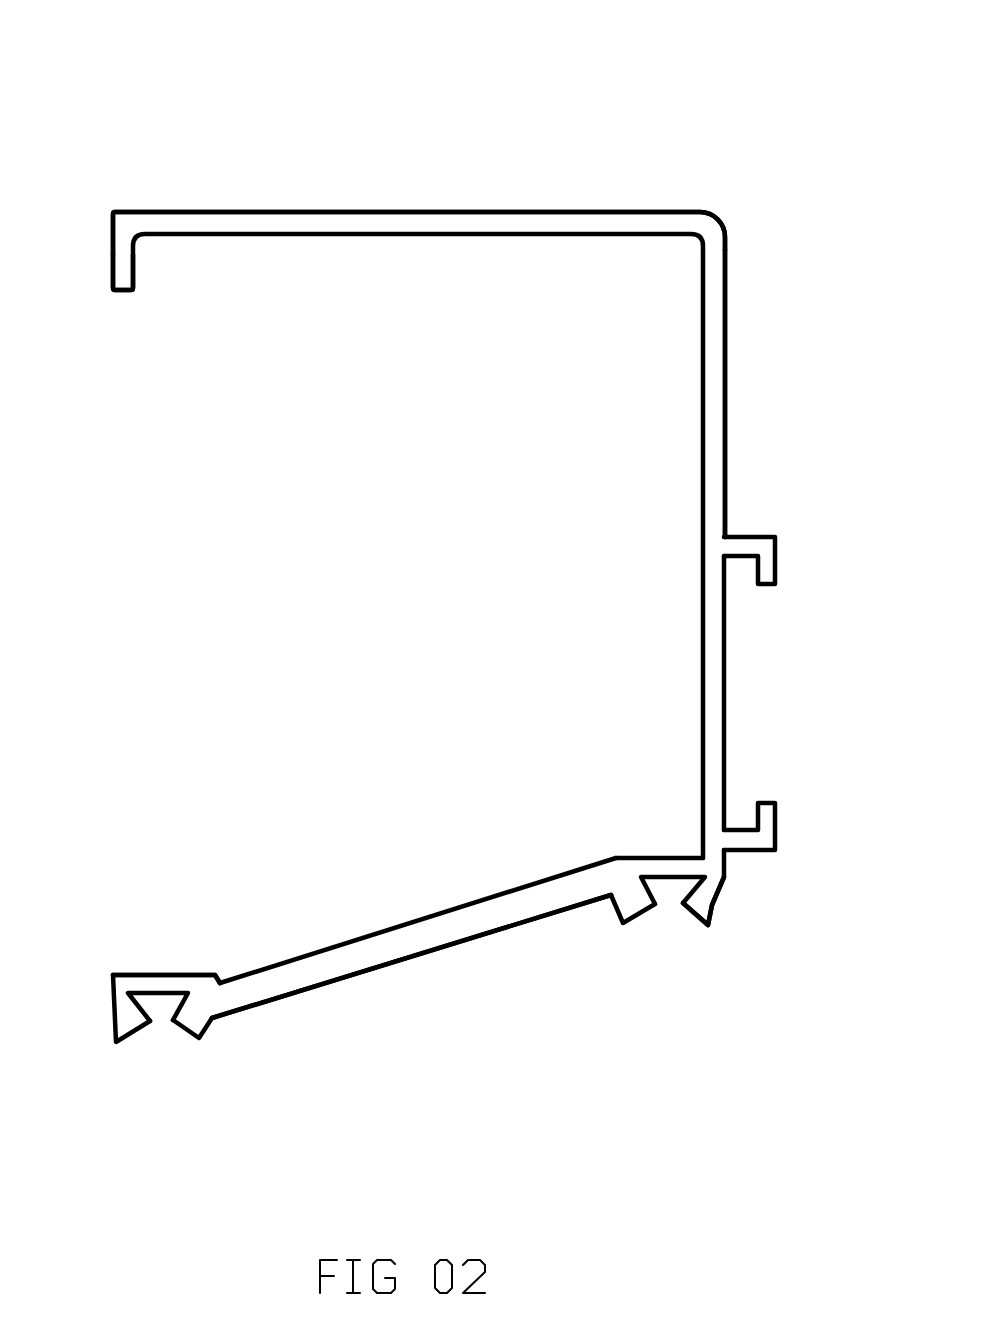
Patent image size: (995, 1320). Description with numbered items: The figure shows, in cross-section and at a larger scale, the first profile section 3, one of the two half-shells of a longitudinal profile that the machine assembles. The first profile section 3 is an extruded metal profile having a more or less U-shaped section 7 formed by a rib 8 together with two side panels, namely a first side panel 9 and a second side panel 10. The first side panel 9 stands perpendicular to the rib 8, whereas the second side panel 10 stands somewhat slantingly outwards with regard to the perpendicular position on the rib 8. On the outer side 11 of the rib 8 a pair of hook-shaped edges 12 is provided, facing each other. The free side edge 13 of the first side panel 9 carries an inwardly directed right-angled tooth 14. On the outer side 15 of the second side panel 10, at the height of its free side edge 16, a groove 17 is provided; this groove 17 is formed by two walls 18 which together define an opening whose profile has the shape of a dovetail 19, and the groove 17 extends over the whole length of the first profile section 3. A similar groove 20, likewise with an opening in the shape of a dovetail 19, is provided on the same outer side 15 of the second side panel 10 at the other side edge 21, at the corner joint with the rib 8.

The first profile section 3 is at (177, 87).
The U-shaped section 7 is at (385, 438).
The rib 8 is at (702, 500).
The first side panel 9 is at (368, 228).
The second side panel 10 is at (388, 948).
The outer side of the rib 11 is at (767, 449).
The hook-shaped edges 12 is at (766, 588).
The free side edge of the first side panel 13 is at (103, 312).
The right-angled tooth 14 is at (116, 292).
The outer side of the second side panel 15 is at (434, 1003).
The free side edge of the second side panel 16 is at (103, 967).
The groove 17 is at (155, 1070).
The walls 18 is at (116, 1022).
The dovetail 19 is at (165, 986).
The similar groove 20 is at (665, 958).
The other side edge 21 is at (738, 990).